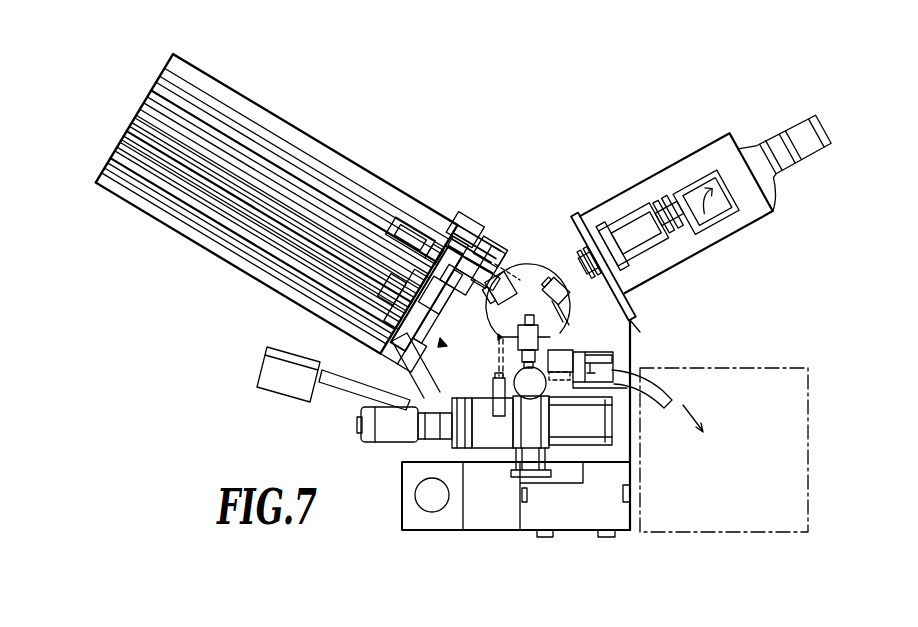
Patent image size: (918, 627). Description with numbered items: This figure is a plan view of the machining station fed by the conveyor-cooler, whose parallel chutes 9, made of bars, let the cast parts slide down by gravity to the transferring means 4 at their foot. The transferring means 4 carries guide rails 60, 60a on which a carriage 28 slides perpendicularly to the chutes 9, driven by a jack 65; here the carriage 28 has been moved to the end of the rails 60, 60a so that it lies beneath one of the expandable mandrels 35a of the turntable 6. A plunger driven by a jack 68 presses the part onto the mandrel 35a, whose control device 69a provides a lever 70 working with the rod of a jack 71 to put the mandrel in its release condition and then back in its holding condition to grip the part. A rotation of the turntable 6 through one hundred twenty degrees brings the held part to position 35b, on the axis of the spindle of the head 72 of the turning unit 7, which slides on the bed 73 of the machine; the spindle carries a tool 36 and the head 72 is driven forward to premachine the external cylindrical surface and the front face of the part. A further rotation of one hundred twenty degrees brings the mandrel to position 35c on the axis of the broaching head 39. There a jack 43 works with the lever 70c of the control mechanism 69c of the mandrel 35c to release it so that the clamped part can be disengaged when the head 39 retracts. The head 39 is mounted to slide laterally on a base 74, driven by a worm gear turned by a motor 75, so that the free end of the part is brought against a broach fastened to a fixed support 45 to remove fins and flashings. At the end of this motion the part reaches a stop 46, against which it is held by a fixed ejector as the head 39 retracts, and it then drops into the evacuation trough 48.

The transferring means 4 is at (447, 340).
The turntable 6 is at (556, 331).
The turning unit 7 is at (664, 168).
The chutes 9 is at (285, 215).
The carriage 28 is at (478, 250).
The expandable mandrel 35a is at (498, 264).
The position 35b is at (568, 262).
The mandrel position 35c is at (590, 348).
The tool 36 is at (572, 300).
The broaching head 39 is at (536, 398).
The jack 43 is at (495, 406).
The fixed support 45 is at (598, 362).
The stop 46 is at (670, 392).
The evacuation trough 48 is at (665, 403).
The guide rail 60 is at (398, 341).
The guide rail 60a is at (455, 348).
The jack 65 is at (411, 391).
The jack 68 is at (437, 224).
The control device 69a is at (504, 272).
The control mechanism 69c is at (550, 343).
The lever 70 is at (518, 266).
The lever 70c is at (492, 353).
The jack 71 is at (468, 222).
The head 72 is at (622, 236).
The bed 73 is at (722, 216).
The base 74 is at (618, 406).
The motor 75 is at (386, 432).